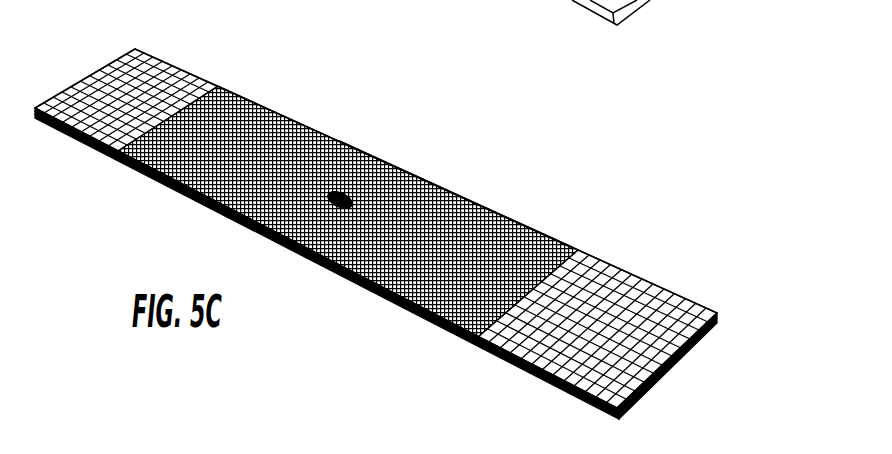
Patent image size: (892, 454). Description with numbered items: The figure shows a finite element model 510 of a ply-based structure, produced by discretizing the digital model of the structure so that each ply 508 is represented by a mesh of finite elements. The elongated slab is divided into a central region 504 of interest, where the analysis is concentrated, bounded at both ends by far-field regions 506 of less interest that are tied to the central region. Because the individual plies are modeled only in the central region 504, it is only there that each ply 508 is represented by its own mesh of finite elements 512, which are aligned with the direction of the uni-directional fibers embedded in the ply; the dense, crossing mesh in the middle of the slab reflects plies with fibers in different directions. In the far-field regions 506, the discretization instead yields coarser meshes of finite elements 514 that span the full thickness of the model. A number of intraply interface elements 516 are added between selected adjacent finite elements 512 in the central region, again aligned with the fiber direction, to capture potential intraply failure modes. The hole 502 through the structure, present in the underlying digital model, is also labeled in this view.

The hole 502 is at (307, 262).
The central region 504 is at (257, 103).
The far-field regions 506 is at (83, 75).
The ply 508 is at (182, 198).
The finite element model 510 is at (452, 125).
The finite elements 512 is at (440, 322).
The finite elements 514 is at (630, 288).
The intraply interface elements 516 is at (340, 140).